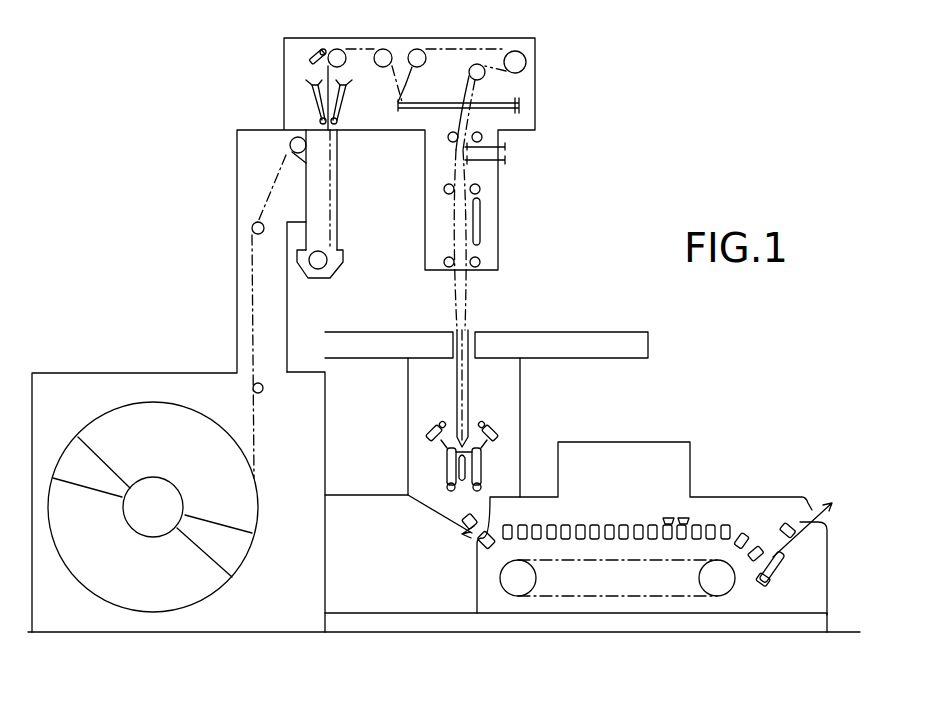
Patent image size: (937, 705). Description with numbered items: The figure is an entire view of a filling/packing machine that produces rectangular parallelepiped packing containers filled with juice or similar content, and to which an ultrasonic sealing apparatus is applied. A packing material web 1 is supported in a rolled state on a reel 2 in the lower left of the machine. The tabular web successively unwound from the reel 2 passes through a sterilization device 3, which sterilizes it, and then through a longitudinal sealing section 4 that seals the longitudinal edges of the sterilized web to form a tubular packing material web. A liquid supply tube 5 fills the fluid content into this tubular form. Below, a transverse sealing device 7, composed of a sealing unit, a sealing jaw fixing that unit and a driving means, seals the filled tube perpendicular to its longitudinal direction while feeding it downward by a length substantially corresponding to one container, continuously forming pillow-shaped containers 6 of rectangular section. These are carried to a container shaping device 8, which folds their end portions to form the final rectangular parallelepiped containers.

The packing material web 1 is at (250, 300).
The reel 2 is at (90, 428).
The sterilization device 3 is at (355, 212).
The longitudinal sealing section 4 is at (496, 227).
The liquid supply tube 5 is at (510, 160).
The pillow-shaped containers 6 is at (463, 530).
The transverse sealing device 7 is at (501, 458).
The container shaping device 8 is at (609, 484).